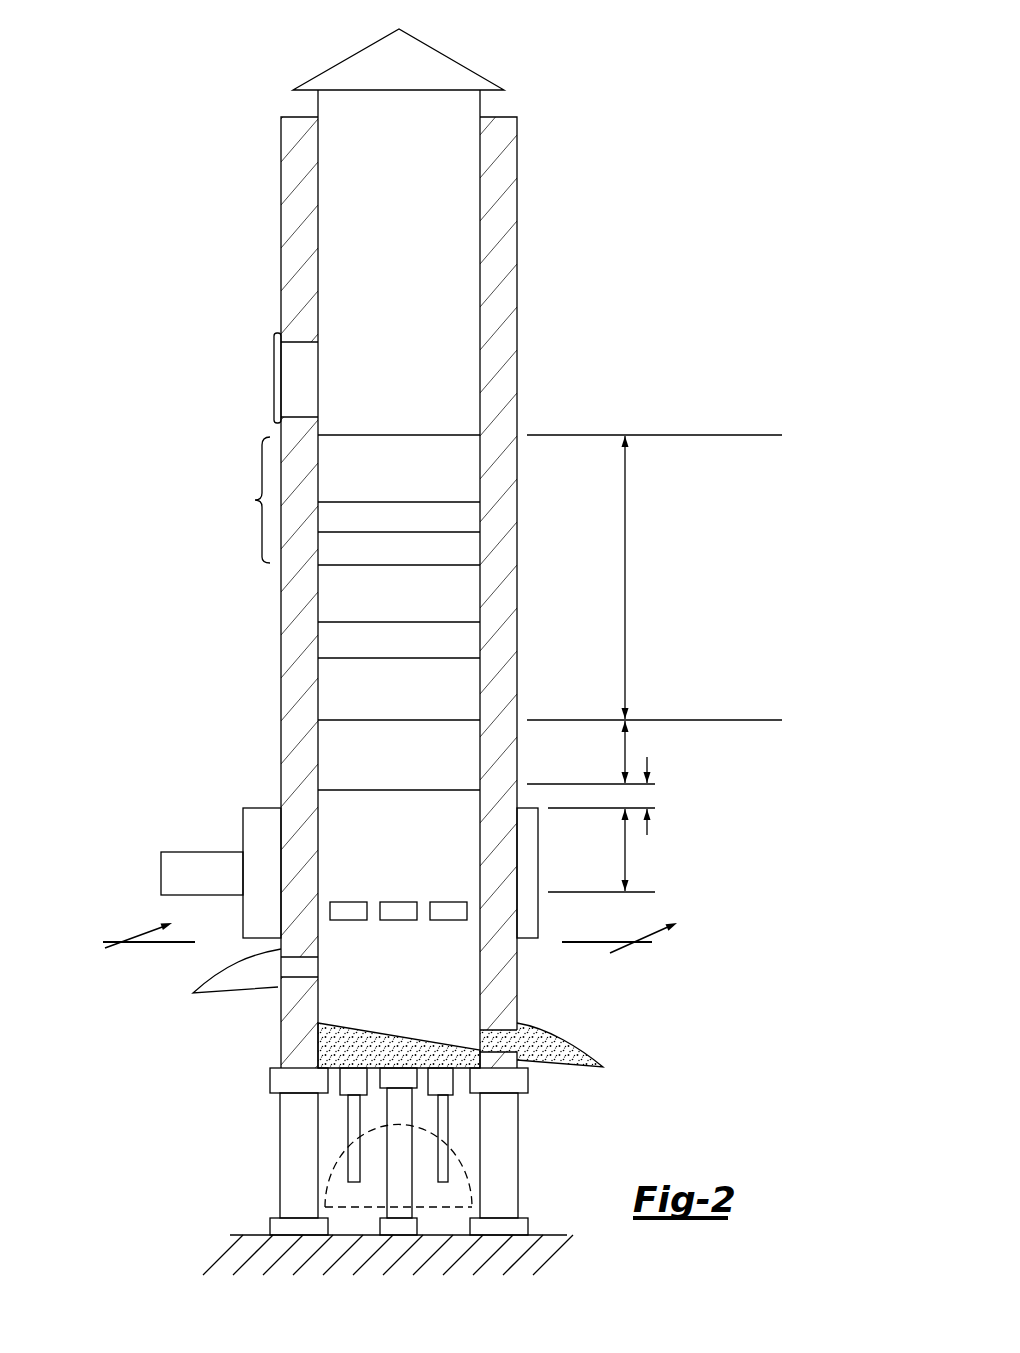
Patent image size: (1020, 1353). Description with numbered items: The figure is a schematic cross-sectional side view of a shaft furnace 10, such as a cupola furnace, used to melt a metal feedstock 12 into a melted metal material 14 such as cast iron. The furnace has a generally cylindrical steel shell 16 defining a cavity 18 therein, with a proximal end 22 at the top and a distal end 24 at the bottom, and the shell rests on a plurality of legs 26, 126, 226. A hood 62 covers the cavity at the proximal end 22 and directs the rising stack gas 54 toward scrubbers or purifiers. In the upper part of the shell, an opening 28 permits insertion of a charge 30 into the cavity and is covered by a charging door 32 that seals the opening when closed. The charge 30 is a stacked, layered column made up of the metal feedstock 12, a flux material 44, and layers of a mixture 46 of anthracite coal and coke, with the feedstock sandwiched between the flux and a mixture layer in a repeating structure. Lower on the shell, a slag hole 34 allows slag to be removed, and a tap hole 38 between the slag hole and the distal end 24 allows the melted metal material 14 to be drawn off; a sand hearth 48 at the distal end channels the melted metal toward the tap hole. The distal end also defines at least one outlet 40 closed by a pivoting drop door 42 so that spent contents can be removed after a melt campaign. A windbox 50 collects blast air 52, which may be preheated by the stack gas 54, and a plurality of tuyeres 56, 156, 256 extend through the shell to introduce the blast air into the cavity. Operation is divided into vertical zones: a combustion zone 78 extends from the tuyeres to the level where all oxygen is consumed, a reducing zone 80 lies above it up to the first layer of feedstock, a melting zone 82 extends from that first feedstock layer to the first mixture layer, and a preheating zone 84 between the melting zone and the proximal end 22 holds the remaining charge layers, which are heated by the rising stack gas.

The shaft furnace 10 is at (183, 38).
The metal feedstock 12 is at (387, 481).
The melted metal material 14 is at (545, 1047).
The shell 16 is at (281, 215).
The cavity 18 is at (340, 184).
The proximal end 22 is at (358, 65).
The distal end 24 is at (238, 1062).
The leg 26 is at (300, 1238).
The leg 126 is at (400, 1238).
The leg 226 is at (500, 1238).
The opening 28 is at (290, 390).
The charge 30 is at (252, 500).
The charging door 32 is at (274, 381).
The slag hole 34 is at (304, 967).
The tap hole 38 is at (506, 1044).
The outlet 40 is at (334, 1082).
The drop door 42 is at (446, 1141).
The flux material 44 is at (387, 524).
The mixture 46 is at (387, 559).
The hearth 48 is at (440, 1048).
The windbox 50 is at (262, 808).
The blast air 52 is at (174, 874).
The stack gas 54 is at (387, 290).
The tuyere 56 is at (348, 921).
The tuyere 156 is at (446, 921).
The tuyere 256 is at (398, 921).
The hood 62 is at (347, 60).
The combustion zone 78 is at (650, 862).
The reducing zone 80 is at (650, 828).
The melting zone 82 is at (648, 749).
The preheating zone 84 is at (654, 577).